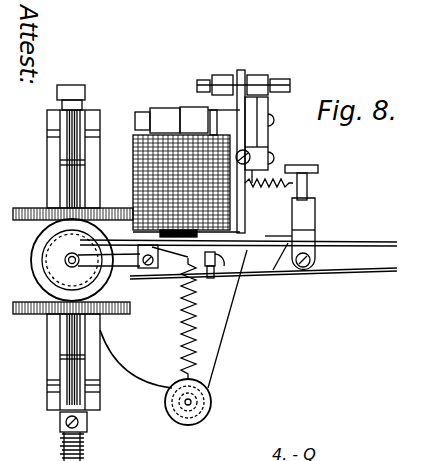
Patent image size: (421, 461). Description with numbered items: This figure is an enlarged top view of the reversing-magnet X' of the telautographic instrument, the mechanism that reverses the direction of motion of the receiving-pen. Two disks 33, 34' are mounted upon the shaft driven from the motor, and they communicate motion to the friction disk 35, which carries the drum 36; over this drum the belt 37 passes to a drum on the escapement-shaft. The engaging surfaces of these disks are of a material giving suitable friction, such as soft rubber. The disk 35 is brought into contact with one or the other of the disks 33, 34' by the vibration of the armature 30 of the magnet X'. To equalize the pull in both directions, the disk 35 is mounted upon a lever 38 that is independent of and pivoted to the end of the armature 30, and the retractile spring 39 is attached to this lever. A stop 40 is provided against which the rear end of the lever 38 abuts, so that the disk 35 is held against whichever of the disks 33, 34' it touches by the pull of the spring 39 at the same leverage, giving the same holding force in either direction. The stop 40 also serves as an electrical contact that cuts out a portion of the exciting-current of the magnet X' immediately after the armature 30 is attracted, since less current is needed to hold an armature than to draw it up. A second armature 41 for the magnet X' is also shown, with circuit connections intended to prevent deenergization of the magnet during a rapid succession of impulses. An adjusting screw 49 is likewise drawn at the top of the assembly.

The armature 30 is at (238, 257).
The disk 33 is at (38, 208).
The disk 34' is at (65, 317).
The disk 35 is at (33, 251).
The drum 36 is at (55, 266).
The belt 37 is at (380, 246).
The lever 38 is at (136, 268).
The retractile spring 39 is at (181, 324).
The stop 40 is at (225, 319).
The second armature 41 is at (253, 138).
The adjusting screw 49 is at (283, 79).
The reversing-magnet X' is at (170, 172).